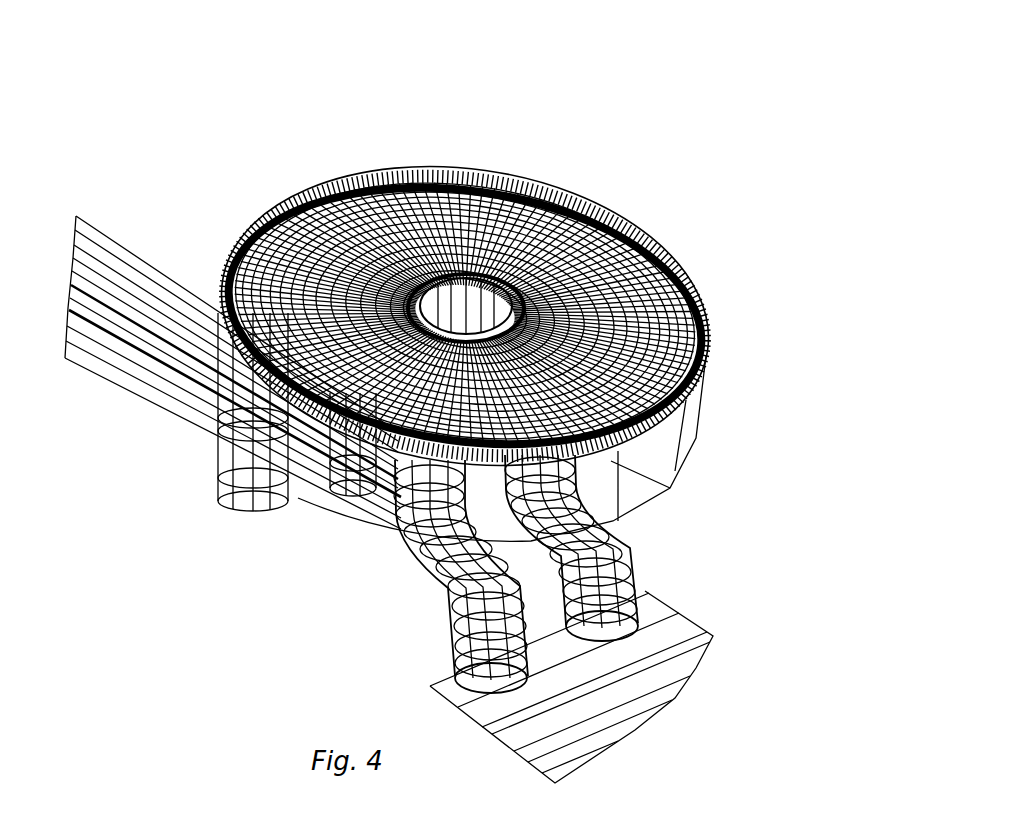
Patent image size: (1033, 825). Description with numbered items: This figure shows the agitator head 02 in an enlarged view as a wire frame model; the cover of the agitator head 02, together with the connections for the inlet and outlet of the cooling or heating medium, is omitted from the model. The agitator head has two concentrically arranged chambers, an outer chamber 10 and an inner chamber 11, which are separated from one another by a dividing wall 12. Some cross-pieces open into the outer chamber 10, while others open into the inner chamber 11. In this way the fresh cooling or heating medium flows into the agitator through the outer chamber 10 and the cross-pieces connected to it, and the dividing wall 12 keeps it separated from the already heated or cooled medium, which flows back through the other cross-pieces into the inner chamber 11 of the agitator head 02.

The agitator head 02 is at (503, 257).
The outer chamber 10 is at (290, 182).
The inner chamber 11 is at (385, 172).
The dividing wall 12 is at (700, 348).